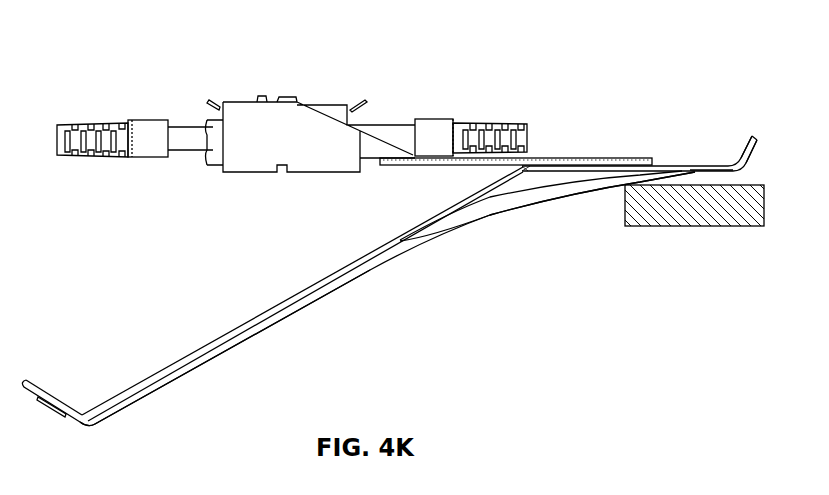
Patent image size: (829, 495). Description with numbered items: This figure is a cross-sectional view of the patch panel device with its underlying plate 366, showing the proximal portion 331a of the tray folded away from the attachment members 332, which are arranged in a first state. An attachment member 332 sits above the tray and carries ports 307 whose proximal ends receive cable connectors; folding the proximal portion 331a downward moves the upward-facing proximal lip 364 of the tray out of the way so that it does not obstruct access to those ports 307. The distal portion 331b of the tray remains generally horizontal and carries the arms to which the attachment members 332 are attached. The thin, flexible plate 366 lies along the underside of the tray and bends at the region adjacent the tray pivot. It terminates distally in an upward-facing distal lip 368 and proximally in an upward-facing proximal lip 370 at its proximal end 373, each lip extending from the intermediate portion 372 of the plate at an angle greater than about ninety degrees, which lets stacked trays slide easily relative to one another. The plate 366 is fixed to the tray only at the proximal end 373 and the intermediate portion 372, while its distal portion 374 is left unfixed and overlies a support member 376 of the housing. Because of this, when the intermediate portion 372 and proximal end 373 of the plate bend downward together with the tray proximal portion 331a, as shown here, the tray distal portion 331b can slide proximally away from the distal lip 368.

The port 307 is at (213, 153).
The attachment member 332 is at (242, 110).
The proximal portion of the tray 331a is at (358, 322).
The distal portion of the tray 331b is at (677, 153).
The proximal lip 364 is at (28, 378).
The plate 366 is at (537, 196).
The distal lip 368 is at (754, 133).
The proximal lip 370 is at (72, 419).
The intermediate portion 372 is at (442, 225).
The proximal end 373 is at (200, 361).
The distal portion of the plate 374 is at (702, 171).
The support member 376 is at (652, 227).